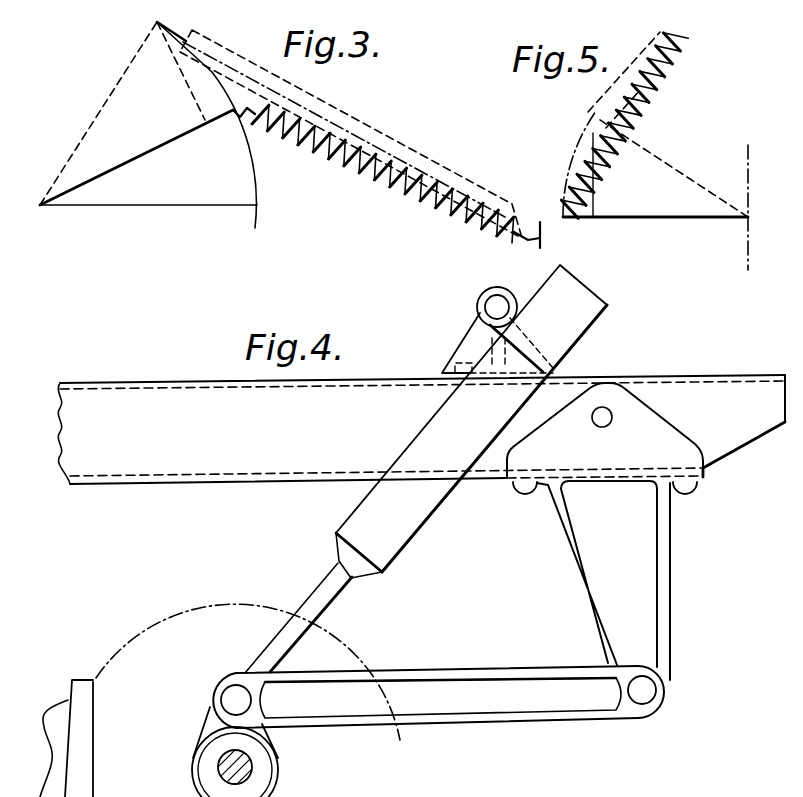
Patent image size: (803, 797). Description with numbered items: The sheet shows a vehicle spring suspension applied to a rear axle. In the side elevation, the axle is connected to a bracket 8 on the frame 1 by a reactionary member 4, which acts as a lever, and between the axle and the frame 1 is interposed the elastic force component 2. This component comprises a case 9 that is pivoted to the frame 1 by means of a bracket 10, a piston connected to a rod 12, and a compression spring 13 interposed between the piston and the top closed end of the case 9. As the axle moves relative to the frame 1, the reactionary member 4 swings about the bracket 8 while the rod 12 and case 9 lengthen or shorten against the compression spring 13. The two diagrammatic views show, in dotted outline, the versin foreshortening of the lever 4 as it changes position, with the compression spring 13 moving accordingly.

In FIG. 4, the frame 1 is at (421, 429).
In FIG. 4, the elastic force component 2 is at (471, 421).
In FIG. 3, the reactionary member 4 is at (116, 91).
In FIG. 5, the reactionary member 4 is at (690, 180).
In FIG. 4, the reactionary member 4 is at (518, 688).
In FIG. 4, the bracket 8 is at (647, 577).
In FIG. 4, the case 9 is at (470, 455).
In FIG. 4, the bracket 10 is at (470, 341).
In FIG. 4, the rod 12 is at (332, 585).
In FIG. 3, the compression spring 13 is at (465, 188).
In FIG. 5, the compression spring 13 is at (657, 38).